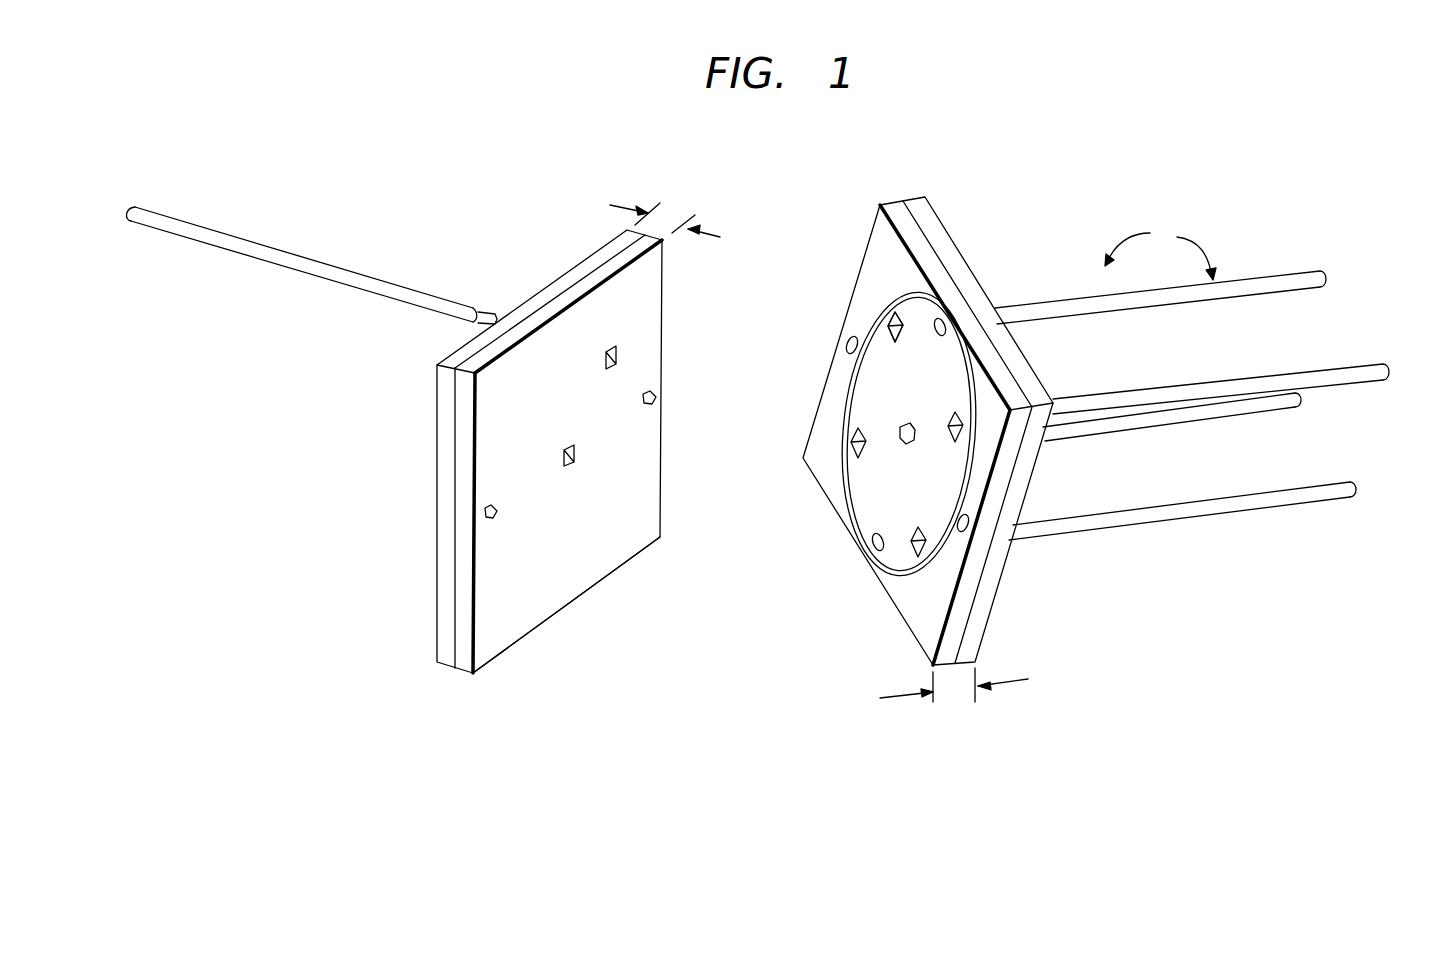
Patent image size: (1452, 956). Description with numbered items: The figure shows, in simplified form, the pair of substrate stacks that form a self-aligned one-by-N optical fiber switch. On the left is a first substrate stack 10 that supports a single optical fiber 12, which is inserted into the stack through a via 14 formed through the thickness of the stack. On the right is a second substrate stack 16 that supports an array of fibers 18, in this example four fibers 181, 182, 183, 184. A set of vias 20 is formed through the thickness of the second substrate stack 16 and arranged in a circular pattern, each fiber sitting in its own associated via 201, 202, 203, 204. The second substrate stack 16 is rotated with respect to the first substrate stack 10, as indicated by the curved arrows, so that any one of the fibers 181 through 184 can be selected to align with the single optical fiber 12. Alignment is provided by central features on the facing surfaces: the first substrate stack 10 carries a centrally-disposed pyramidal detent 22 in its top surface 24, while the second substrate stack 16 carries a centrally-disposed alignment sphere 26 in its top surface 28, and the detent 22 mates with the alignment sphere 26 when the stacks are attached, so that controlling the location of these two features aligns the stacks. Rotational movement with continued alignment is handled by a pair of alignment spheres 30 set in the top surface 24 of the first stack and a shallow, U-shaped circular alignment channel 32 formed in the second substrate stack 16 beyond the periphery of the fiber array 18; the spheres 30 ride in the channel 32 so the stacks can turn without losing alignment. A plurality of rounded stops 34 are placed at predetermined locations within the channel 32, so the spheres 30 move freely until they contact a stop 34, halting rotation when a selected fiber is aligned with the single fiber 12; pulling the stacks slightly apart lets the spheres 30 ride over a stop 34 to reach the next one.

The first substrate stack 10 is at (440, 665).
The single optical fiber 12 is at (330, 268).
The via 14 is at (618, 352).
The second substrate stack 16 is at (955, 705).
The array of fibers 18 is at (1223, 392).
The first fiber of array 181 is at (1288, 278).
The second fiber of array 182 is at (1352, 372).
The third fiber of array 183 is at (1330, 497).
The fourth fiber of array 184 is at (1253, 405).
The set of vias 20 is at (890, 317).
The first via 201 is at (900, 317).
The second via 202 is at (962, 418).
The third via 203 is at (915, 553).
The fourth via 204 is at (852, 447).
The pyramidal detent 22 is at (570, 467).
The top surface 24 is at (498, 633).
The alignment sphere 26 is at (900, 443).
The top surface 28 is at (490, 512).
The alignment spheres 30 is at (655, 397).
The circular alignment channel 32 is at (927, 303).
The rounded stops 34 is at (943, 323).